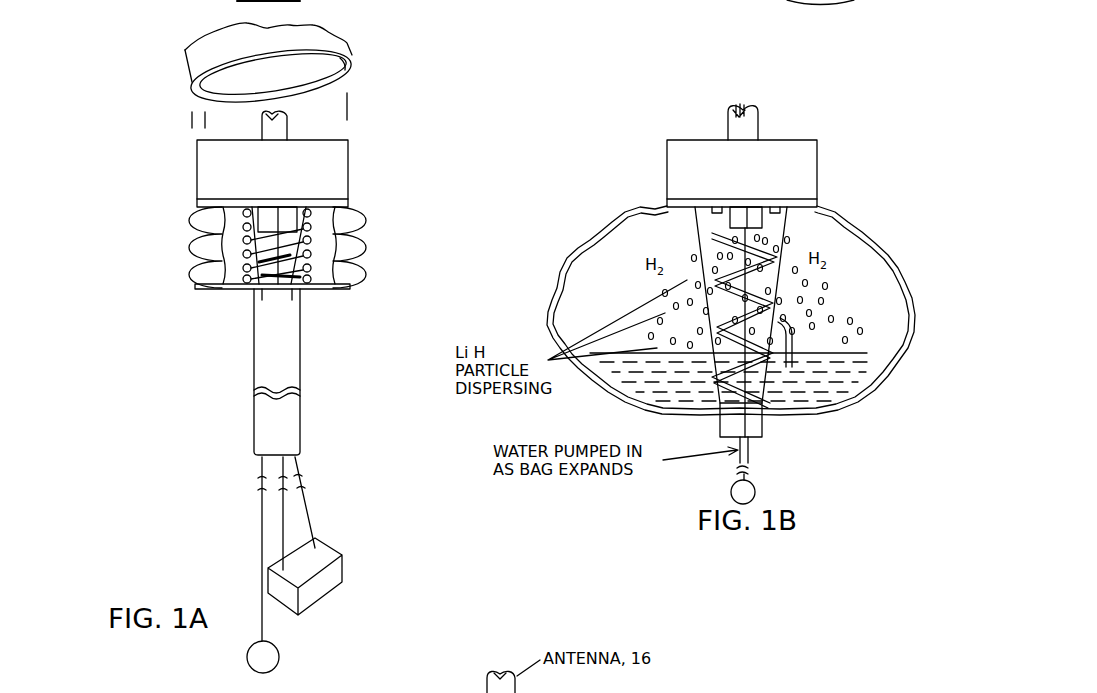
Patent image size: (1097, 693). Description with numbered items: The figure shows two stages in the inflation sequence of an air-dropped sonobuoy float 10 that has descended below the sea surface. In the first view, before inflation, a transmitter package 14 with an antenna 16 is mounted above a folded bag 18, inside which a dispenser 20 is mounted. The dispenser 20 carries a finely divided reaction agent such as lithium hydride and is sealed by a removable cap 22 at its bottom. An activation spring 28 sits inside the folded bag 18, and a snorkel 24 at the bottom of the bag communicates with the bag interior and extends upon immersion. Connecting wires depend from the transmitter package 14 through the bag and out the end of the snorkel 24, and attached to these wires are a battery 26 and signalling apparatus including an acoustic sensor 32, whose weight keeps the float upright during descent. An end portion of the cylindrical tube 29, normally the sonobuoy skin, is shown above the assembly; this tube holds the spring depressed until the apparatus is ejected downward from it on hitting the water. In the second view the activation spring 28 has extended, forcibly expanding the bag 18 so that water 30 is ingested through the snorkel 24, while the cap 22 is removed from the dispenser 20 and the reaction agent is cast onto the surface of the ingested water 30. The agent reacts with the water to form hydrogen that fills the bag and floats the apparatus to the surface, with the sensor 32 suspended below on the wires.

In FIG. 1A, the sonobuoy float 10 is at (118, 123).
In FIG. 1A, the transmitter package 14 is at (350, 155).
In FIG. 1B, the transmitter package 14 is at (817, 157).
In FIG. 1A, the antenna 16 is at (282, 127).
In FIG. 1B, the antenna 16 is at (758, 120).
In FIG. 1A, the folded bag 18 is at (203, 213).
In FIG. 1B, the folded bag 18 is at (873, 370).
In FIG. 1A, the dispenser 20 is at (283, 220).
In FIG. 1B, the dispenser 20 is at (746, 217).
In FIG. 1A, the cap 22 is at (217, 287).
In FIG. 1B, the cap 22 is at (795, 338).
In FIG. 1A, the snorkel 24 is at (293, 320).
In FIG. 1B, the snorkel 24 is at (763, 420).
In FIG. 1A, the battery 26 is at (329, 543).
In FIG. 1A, the activation spring 28 is at (313, 248).
In FIG. 1B, the activation spring 28 is at (780, 247).
In FIG. 1A, the tube end portion 29 is at (350, 43).
In FIG. 1B, the water 30 is at (652, 385).
In FIG. 1A, the acoustic sensor 32 is at (312, 565).
In FIG. 1B, the acoustic sensor 32 is at (756, 492).